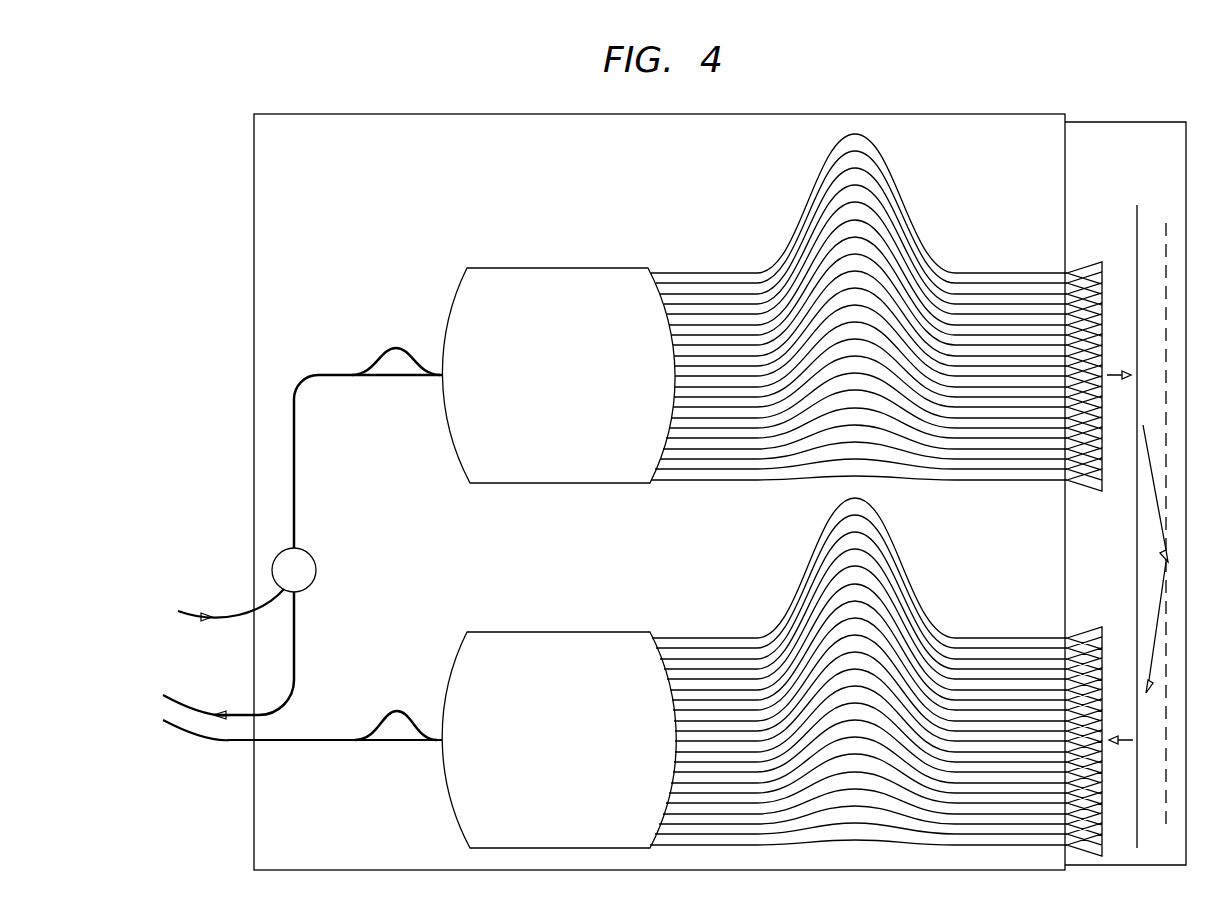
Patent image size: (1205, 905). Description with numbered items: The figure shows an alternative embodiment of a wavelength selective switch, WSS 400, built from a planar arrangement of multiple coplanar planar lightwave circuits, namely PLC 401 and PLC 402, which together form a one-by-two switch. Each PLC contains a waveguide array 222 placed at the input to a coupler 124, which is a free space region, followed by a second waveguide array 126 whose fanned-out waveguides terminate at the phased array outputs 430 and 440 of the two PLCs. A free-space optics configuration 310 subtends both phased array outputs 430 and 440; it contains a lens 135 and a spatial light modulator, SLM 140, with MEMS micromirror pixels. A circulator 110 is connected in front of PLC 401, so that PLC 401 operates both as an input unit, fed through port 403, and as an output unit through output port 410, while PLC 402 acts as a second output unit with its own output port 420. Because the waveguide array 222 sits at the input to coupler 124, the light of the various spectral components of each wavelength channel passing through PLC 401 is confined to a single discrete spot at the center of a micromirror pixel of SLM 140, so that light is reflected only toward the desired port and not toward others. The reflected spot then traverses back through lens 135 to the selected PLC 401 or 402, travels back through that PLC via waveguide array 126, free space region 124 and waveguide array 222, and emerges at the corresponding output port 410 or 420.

The WSS 400 is at (390, 208).
The free-space optics configuration 310 is at (1125, 474).
The lens 135 is at (1137, 208).
The SLM 140 is at (1167, 230).
The circulator 110 is at (316, 569).
The port 403 is at (210, 614).
The output port 410 is at (228, 655).
The output port 420 is at (302, 746).
The PLC 401 is at (357, 497).
The PLC 402 is at (357, 597).
The waveguide array 222 is at (396, 527).
The coupler 124 is at (559, 540).
The waveguide array 126 is at (858, 489).
The phased array output 430 is at (1087, 358).
The phased array output 440 is at (1087, 721).